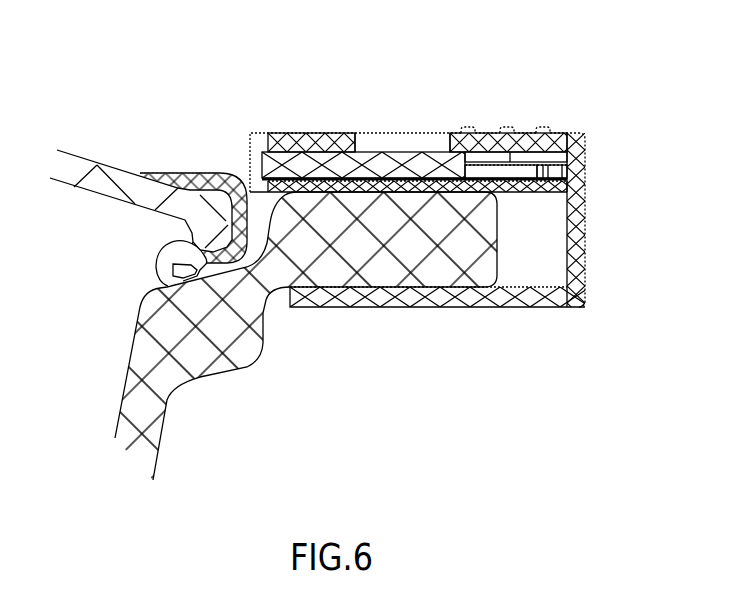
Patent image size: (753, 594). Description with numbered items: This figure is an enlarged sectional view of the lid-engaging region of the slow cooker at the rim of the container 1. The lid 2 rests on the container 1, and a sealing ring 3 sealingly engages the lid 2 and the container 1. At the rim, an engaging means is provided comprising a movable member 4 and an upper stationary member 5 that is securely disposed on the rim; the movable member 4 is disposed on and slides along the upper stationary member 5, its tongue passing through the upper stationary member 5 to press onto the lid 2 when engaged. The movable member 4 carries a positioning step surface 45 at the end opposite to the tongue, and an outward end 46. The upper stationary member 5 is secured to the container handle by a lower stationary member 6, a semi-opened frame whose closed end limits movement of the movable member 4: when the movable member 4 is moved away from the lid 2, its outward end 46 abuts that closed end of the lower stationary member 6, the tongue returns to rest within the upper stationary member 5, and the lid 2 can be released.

The container 1 is at (245, 358).
The lid 2 is at (107, 182).
The sealing ring 3 is at (158, 258).
The movable member 4 is at (518, 135).
The positioning step surface 45 is at (452, 135).
The outward end 46 is at (571, 135).
The upper stationary member 5 is at (313, 130).
The lower stationary member 6 is at (512, 307).